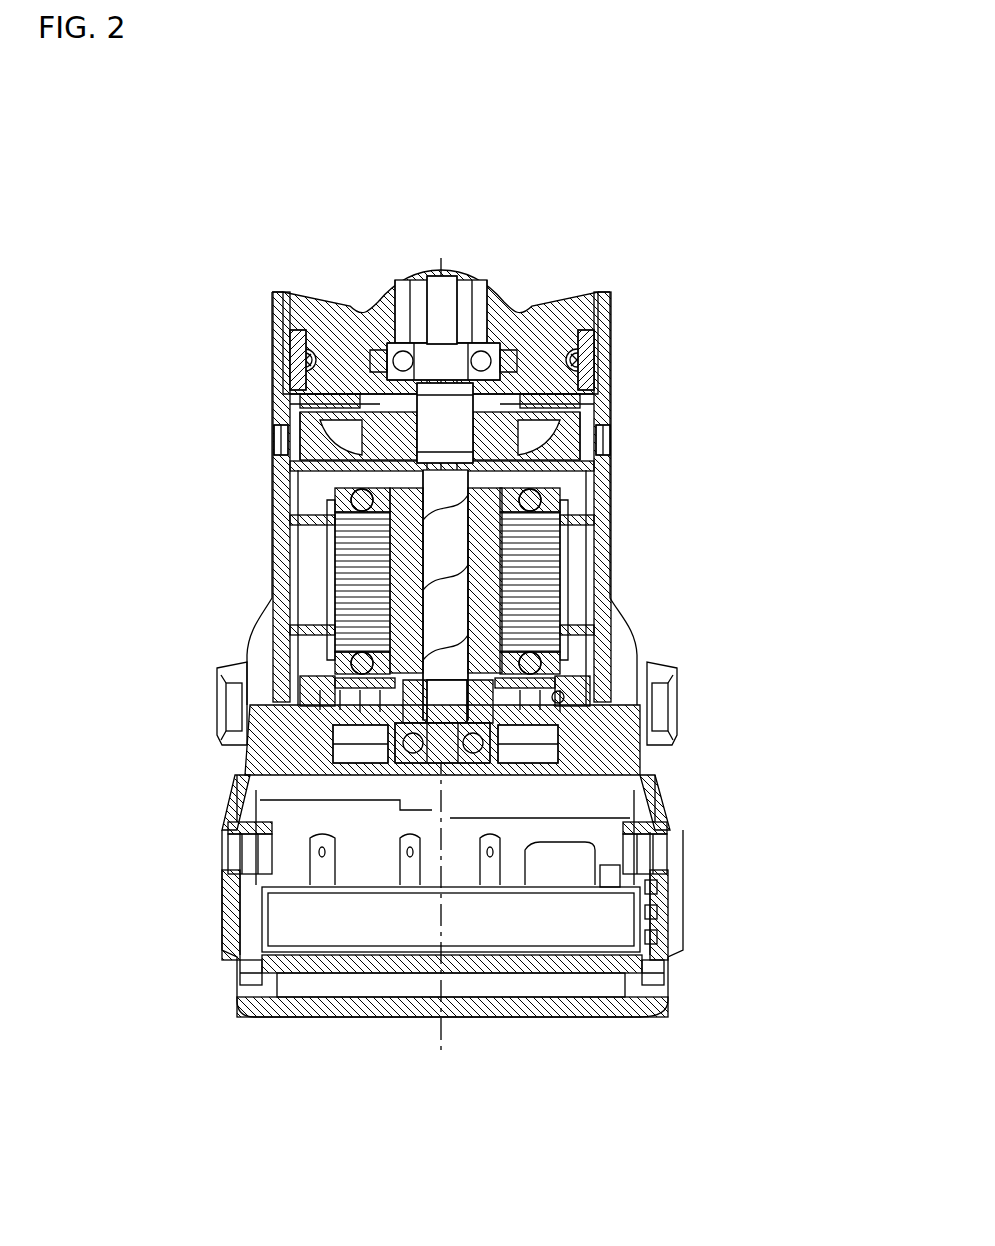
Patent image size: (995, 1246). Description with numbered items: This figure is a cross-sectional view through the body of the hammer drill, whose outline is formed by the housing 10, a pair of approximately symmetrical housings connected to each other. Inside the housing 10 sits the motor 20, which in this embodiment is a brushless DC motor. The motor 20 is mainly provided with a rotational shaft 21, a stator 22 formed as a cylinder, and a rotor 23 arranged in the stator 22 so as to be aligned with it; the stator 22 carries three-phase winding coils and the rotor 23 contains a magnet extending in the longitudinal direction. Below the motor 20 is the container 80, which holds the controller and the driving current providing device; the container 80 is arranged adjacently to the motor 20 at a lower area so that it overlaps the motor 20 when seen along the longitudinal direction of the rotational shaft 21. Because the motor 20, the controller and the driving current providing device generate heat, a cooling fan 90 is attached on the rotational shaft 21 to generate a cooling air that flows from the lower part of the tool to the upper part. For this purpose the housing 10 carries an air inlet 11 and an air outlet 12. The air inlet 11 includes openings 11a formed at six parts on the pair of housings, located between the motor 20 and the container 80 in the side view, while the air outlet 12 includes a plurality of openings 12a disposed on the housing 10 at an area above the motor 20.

The housing 10 is at (607, 312).
The air inlet 11 is at (490, 893).
The openings 11a is at (250, 845).
The air outlet 12 is at (690, 443).
The openings 12a is at (272, 440).
The motor 20 is at (474, 600).
The rotational shaft 21 is at (608, 370).
The stator 22 is at (563, 572).
The rotor 23 is at (405, 537).
The container 80 is at (548, 932).
The cooling fan 90 is at (610, 463).